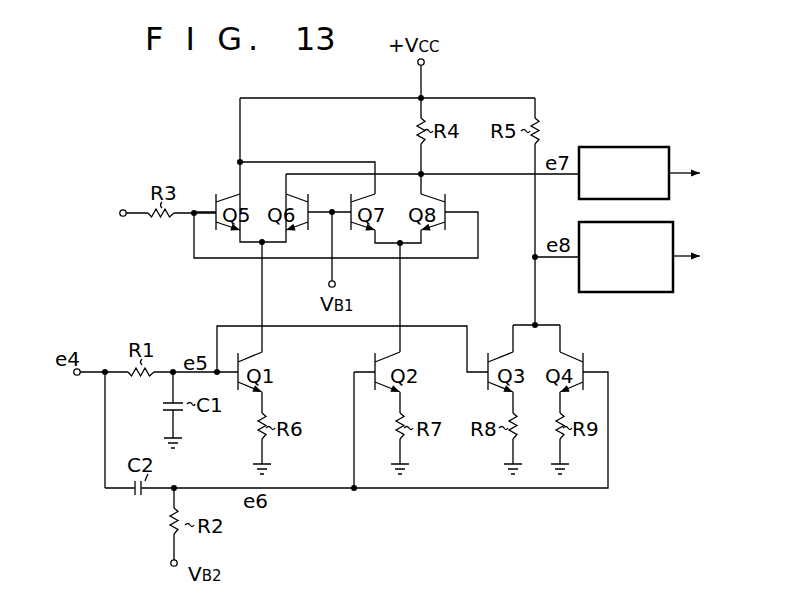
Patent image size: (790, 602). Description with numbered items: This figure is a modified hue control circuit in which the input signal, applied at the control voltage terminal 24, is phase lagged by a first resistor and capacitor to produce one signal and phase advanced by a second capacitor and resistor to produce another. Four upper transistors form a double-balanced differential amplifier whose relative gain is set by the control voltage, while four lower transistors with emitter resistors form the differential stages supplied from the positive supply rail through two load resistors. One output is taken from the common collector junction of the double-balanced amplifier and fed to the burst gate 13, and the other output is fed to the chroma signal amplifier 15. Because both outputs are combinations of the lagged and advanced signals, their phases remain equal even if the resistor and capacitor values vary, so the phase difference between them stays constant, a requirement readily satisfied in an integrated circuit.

The burst gate 13 is at (618, 146).
The chroma signal amplifier 15 is at (634, 292).
The control voltage input terminal (Ec) 24 is at (124, 217).